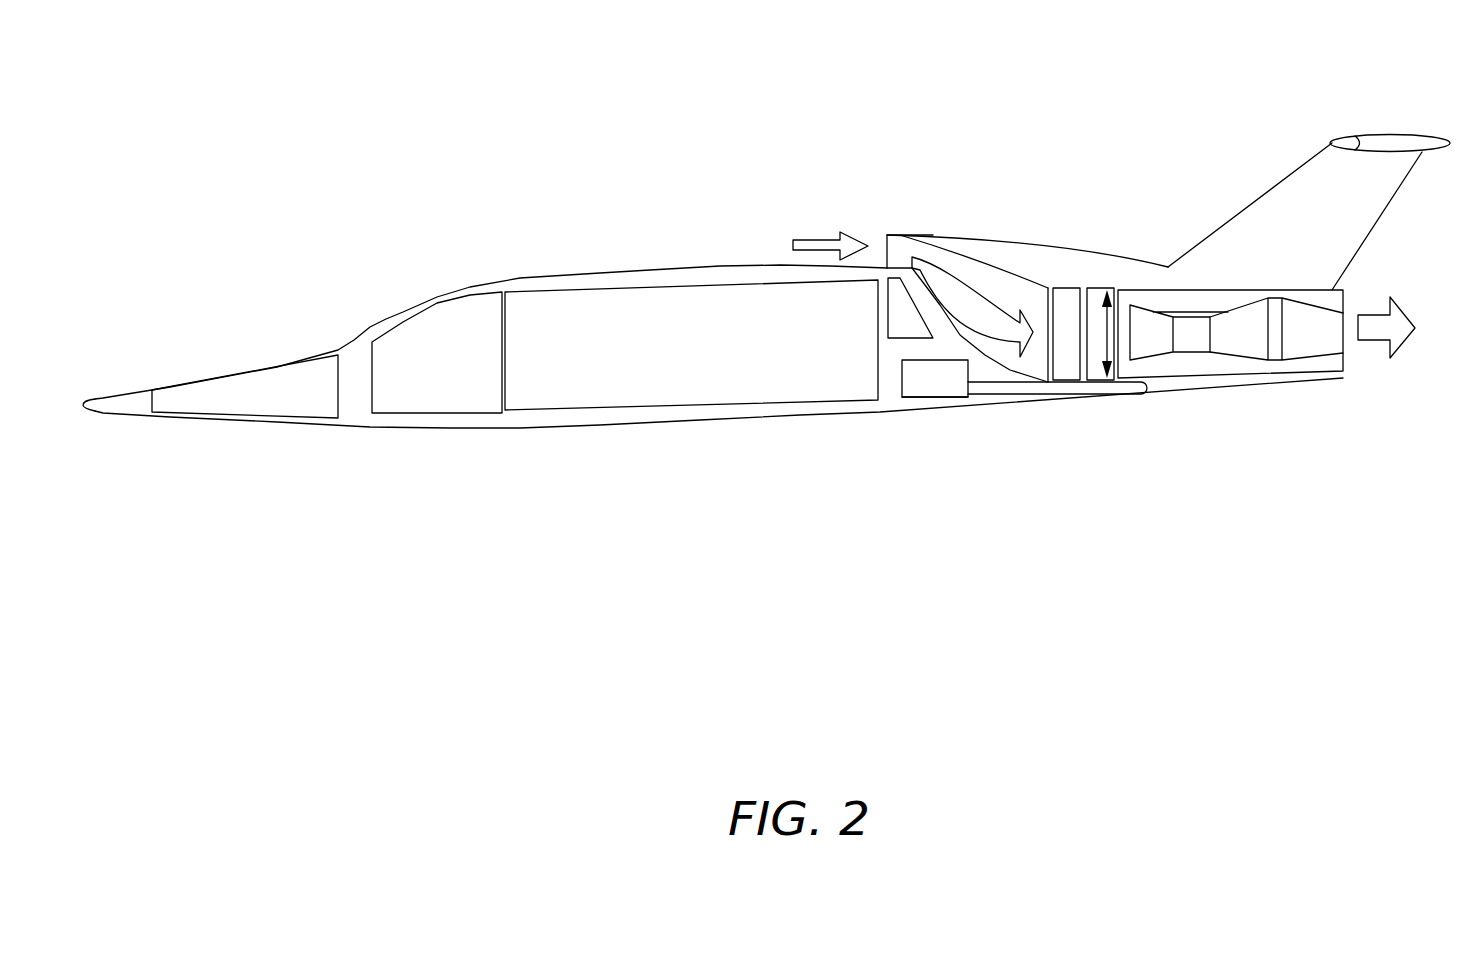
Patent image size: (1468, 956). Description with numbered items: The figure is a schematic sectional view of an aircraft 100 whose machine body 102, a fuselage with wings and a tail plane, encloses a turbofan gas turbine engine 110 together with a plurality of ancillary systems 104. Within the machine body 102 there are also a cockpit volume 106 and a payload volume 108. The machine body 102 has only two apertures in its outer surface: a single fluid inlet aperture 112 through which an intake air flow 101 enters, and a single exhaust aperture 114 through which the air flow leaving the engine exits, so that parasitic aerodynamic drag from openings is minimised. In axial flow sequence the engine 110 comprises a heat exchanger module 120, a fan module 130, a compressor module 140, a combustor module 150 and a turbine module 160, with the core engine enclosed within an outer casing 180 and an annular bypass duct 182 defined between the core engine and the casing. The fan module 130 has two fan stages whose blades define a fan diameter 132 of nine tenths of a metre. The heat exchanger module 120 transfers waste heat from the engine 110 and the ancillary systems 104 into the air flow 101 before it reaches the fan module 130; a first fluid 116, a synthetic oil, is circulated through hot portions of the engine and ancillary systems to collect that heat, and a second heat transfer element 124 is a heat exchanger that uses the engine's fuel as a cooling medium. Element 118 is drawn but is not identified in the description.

The aircraft 100 is at (347, 142).
The intake air flow 101 is at (813, 240).
The machine body 102 is at (433, 295).
The ancillary systems 104 is at (278, 403).
The cockpit volume 106 is at (455, 396).
The payload volume 108 is at (633, 392).
The turbofan gas turbine engine 110 is at (1212, 302).
The fluid inlet aperture 112 is at (887, 234).
The exhaust aperture 114 is at (1343, 338).
The first fluid 116 is at (1027, 395).
The accessory unit 118 is at (922, 384).
The heat exchanger module 120 is at (1062, 288).
The second heat transfer element 124 is at (957, 398).
The fan module 130 is at (1100, 288).
The fan diameter 132 is at (1097, 345).
The compressor module 140 is at (1145, 308).
The combustor module 150 is at (1192, 314).
The turbine module 160 is at (1252, 346).
The outer casing 180 is at (1183, 290).
The annular bypass duct 182 is at (1245, 266).